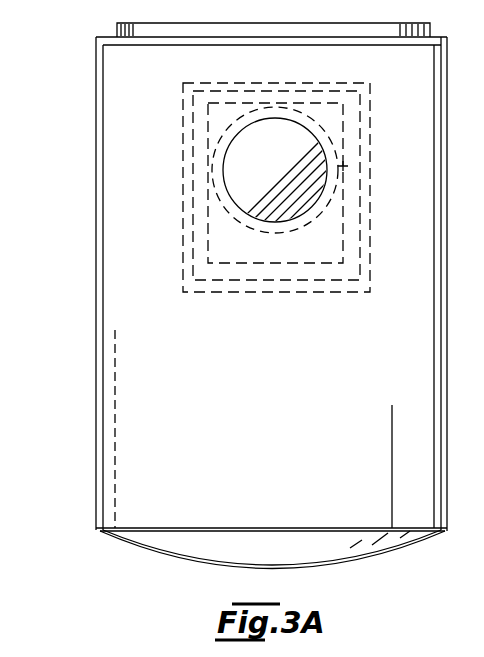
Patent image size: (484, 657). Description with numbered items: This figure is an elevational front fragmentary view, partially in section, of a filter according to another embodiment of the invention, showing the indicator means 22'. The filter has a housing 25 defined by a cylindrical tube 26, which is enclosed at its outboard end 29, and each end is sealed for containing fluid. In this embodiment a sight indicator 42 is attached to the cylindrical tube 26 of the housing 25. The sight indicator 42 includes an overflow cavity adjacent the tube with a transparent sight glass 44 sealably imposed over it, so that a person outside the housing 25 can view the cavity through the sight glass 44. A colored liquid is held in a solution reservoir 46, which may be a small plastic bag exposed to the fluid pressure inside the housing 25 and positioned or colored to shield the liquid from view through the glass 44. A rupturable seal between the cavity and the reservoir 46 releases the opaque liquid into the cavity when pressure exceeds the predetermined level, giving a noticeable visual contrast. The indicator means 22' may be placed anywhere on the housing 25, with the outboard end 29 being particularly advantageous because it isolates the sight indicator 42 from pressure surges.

The indicator means 22' is at (245, 220).
The housing 25 is at (94, 383).
The cylindrical tube 26 is at (97, 425).
The outboard end 29 is at (97, 501).
The sight indicator 42 is at (267, 224).
The transparent sight glass 44 is at (243, 156).
The solution reservoir 46 is at (358, 162).